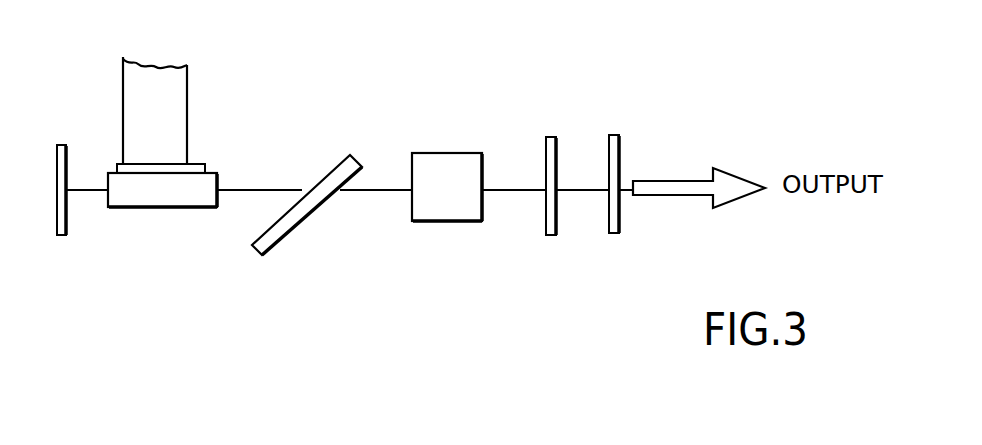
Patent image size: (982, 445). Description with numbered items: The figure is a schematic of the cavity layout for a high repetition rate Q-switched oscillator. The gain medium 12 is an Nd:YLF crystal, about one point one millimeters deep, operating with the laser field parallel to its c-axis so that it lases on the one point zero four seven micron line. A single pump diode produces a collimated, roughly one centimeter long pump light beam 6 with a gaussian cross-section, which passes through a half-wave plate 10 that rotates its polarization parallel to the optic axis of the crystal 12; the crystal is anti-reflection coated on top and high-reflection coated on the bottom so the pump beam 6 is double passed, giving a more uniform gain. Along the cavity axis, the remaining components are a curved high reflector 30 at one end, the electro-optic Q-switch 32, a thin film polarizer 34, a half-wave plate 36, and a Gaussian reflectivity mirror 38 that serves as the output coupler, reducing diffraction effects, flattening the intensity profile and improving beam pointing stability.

The pump light beam 6 is at (187, 85).
The half-wave plate 10 is at (200, 163).
The gain medium 12 is at (178, 207).
The curved high reflector 30 is at (60, 235).
The electro-optic Q-switch 32 is at (442, 213).
The thin film polarizer 34 is at (290, 222).
The half-wave plate 36 is at (552, 235).
The Gaussian reflectivity mirror 38 is at (614, 235).